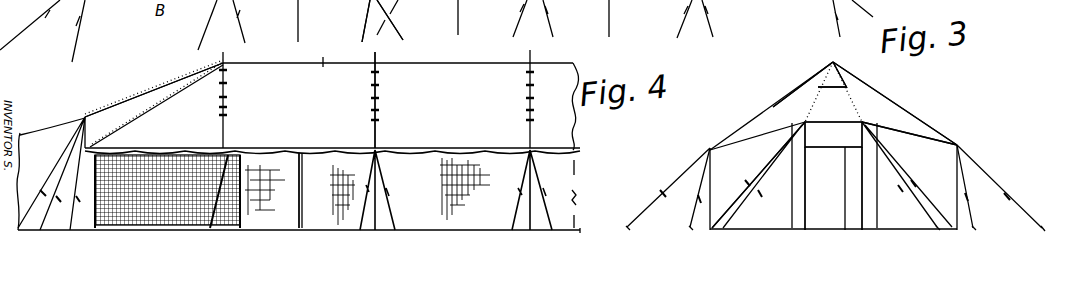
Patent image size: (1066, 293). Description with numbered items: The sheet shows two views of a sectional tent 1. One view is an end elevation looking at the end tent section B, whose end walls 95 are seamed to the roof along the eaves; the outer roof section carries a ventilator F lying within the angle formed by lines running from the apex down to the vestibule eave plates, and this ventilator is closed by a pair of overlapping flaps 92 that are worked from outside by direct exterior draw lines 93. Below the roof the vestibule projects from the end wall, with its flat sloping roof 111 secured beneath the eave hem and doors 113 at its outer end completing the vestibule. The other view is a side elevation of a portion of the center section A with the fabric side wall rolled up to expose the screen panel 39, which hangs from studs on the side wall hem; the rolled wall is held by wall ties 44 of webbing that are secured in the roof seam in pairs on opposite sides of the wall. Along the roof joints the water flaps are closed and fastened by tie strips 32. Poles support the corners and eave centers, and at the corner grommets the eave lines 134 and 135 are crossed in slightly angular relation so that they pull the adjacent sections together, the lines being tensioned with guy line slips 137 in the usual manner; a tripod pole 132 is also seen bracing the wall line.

In FIG. 3, the tent 1 is at (910, 128).
In FIG. 4, the tie strips 32 is at (382, 92).
In FIG. 4, the screen panel 39 is at (330, 163).
In FIG. 4, the wall ties 44 is at (485, 152).
In FIG. 3, the overlapping flaps 92 is at (843, 78).
In FIG. 3, the draw lines 93 is at (877, 102).
In FIG. 3, the end walls 95 is at (742, 163).
In FIG. 3, the sloping roof 111 is at (833, 134).
In FIG. 3, the doors 113 is at (833, 188).
In FIG. 4, the tripod pole 132 is at (427, 148).
In FIG. 4, the eave line 134 is at (397, 25).
In FIG. 4, the eave line 135 is at (358, 23).
In FIG. 4, the guy line slips 137 is at (377, 34).
In FIG. 4, the center section A is at (333, 57).
In FIG. 4, the end tent section B is at (132, 100).
In FIG. 3, the ventilator F is at (832, 62).